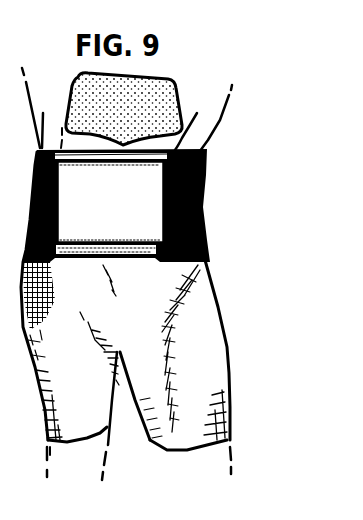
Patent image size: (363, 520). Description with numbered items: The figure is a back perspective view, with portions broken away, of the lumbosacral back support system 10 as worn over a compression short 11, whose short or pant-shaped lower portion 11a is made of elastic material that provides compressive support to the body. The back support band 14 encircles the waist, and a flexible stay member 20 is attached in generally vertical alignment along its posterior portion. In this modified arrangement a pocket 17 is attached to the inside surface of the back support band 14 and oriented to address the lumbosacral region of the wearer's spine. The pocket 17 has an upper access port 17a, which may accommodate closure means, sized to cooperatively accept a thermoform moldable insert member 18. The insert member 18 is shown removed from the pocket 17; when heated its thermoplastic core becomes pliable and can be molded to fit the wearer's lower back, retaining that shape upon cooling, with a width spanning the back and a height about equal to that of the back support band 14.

The lumbosacral back support system 10 is at (142, 314).
The compression short 11 is at (203, 304).
The lower portion 11a is at (213, 386).
The back support band 14 is at (212, 144).
The pocket 17 is at (121, 215).
The upper access port 17a is at (195, 117).
The thermoform moldable insert member 18 is at (155, 89).
The flexible stay member 20 is at (42, 108).